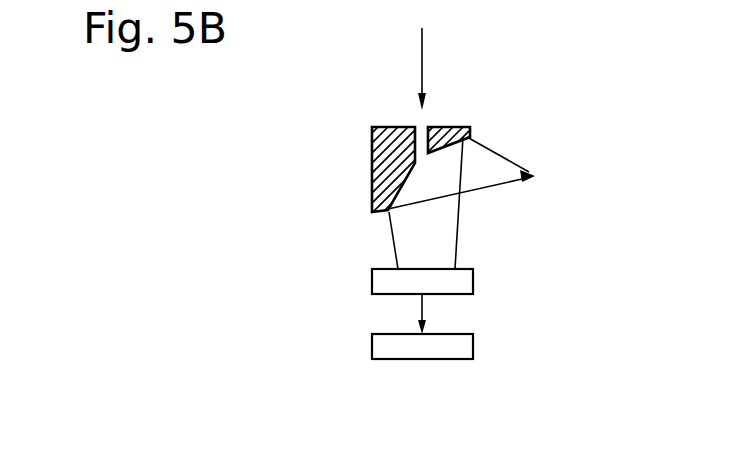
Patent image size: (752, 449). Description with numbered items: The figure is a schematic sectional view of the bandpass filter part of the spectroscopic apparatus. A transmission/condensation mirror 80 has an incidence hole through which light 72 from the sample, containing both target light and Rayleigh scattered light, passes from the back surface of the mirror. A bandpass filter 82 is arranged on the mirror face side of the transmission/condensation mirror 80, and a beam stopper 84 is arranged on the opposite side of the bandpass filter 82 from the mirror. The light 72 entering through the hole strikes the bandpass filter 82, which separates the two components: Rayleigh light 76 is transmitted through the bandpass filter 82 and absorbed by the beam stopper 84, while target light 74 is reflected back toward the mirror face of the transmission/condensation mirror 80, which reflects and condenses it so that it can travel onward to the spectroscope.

The light 72 is at (420, 55).
The transmission/condensation mirror 80 is at (372, 167).
The target light 74 is at (505, 185).
The bandpass filter 82 is at (372, 282).
The Rayleigh light 76 is at (425, 308).
The beam stopper 84 is at (372, 347).